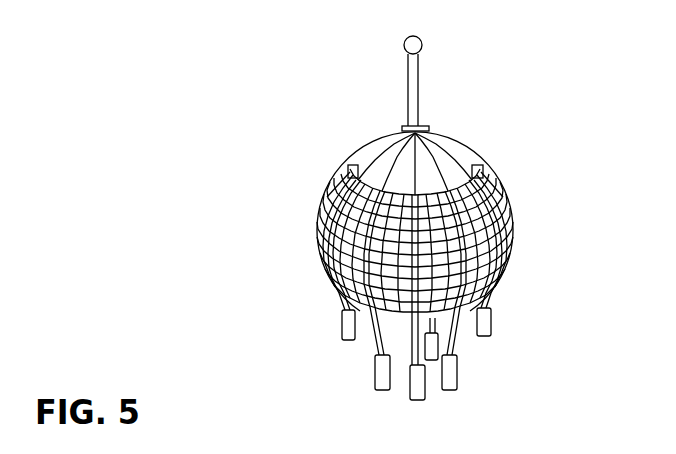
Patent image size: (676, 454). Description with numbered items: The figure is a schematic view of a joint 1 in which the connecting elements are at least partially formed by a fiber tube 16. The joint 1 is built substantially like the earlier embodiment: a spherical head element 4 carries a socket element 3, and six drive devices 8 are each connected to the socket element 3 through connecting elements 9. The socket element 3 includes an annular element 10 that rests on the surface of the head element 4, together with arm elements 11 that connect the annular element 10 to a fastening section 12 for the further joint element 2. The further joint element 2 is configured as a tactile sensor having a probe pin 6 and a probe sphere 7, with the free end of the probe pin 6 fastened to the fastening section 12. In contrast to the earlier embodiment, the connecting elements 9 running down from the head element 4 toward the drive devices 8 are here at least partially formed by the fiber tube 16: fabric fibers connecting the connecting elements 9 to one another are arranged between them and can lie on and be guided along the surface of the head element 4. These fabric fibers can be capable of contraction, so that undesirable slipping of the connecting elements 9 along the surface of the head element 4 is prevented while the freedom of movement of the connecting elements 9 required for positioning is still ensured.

The joint 1 is at (257, 318).
The further joint element 2 is at (450, 87).
The socket element 3 is at (480, 162).
The head element 4 is at (377, 160).
The probe pin 6 is at (417, 103).
The probe sphere 7 is at (427, 44).
The drive device 8 is at (343, 323).
The connecting element 9 is at (470, 230).
The annular element 10 is at (342, 162).
The arm element 11 is at (392, 150).
The fastening section 12 is at (404, 127).
The fiber tube 16 is at (500, 187).